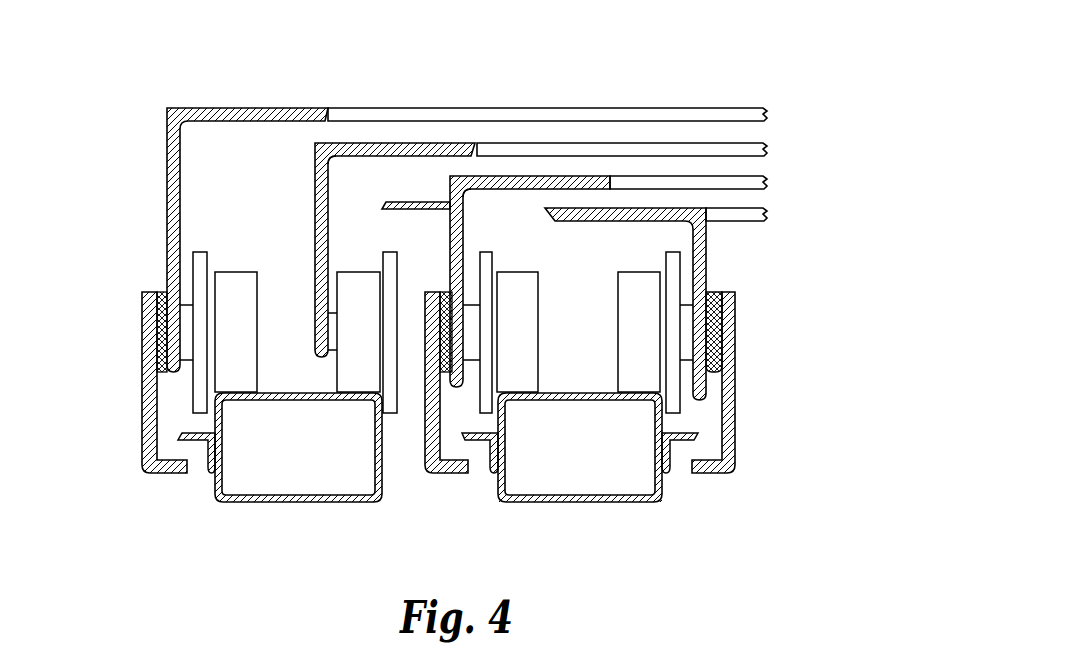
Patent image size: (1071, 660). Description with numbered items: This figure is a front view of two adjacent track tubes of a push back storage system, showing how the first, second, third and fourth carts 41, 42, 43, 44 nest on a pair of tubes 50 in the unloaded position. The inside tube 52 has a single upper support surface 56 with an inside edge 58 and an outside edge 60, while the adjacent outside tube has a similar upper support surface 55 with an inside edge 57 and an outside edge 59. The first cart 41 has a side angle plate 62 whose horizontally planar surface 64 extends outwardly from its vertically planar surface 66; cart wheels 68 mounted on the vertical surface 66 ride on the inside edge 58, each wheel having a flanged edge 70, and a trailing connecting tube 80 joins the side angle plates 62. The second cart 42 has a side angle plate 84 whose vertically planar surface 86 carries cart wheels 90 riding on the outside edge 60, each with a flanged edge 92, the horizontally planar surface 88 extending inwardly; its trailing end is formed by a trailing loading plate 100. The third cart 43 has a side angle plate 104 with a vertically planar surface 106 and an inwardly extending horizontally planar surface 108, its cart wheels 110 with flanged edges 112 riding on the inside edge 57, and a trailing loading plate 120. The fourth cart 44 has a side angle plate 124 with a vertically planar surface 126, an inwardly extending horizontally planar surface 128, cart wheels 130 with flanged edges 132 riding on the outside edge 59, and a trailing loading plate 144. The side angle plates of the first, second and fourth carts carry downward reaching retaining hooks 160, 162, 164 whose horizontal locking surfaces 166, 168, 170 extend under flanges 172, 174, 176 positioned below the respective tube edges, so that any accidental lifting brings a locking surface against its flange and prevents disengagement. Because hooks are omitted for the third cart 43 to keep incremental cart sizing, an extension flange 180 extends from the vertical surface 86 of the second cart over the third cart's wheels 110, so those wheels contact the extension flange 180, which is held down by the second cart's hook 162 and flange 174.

The first cart 41 is at (637, 228).
The second cart 42 is at (472, 195).
The third cart 43 is at (337, 165).
The fourth cart 44 is at (255, 85).
The pair of tubes 50 is at (612, 548).
The inside tube 52 is at (618, 502).
The upper support surface 55 is at (312, 398).
The upper support surface 56 is at (570, 400).
The inside edge 57 is at (360, 402).
The inside edge 58 is at (632, 400).
The outside edge 59 is at (235, 402).
The outside edge 60 is at (522, 398).
The side angle plate 62 is at (707, 235).
The horizontally planar surface 64 is at (663, 224).
The vertically planar surface 66 is at (708, 275).
The cart wheel 68 is at (632, 340).
The flanged edge 70 is at (683, 397).
The trailing connecting tube 80 is at (740, 215).
The side angle plate 84 is at (447, 176).
The vertically planar surface 86 is at (447, 213).
The horizontally planar surface 88 is at (525, 176).
The cart wheel 90 is at (517, 307).
The flanged edge 92 is at (483, 252).
The trailing loading plate 100 is at (725, 182).
The side angle plate 104 is at (312, 155).
The vertically planar surface 106 is at (322, 205).
The horizontally planar surface 108 is at (380, 143).
The cart wheel 110 is at (353, 365).
The flanged edge 112 is at (390, 420).
The trailing loading plate 120 is at (727, 148).
The side angle plate 124 is at (127, 187).
The vertically planar surface 126 is at (167, 218).
The horizontally planar surface 128 is at (205, 108).
The cart wheel 130 is at (235, 285).
The flanged edge 132 is at (202, 252).
The trailing loading plate 144 is at (652, 108).
The retaining hook 160 is at (142, 420).
The retaining hook 162 is at (420, 437).
The retaining hook 164 is at (737, 437).
The horizontal locking surface 166 is at (165, 473).
The horizontal locking surface 168 is at (458, 475).
The horizontal locking surface 170 is at (716, 473).
The flange 172 is at (197, 443).
The flange 174 is at (473, 440).
The flange 176 is at (678, 440).
The extension flange 180 is at (383, 205).